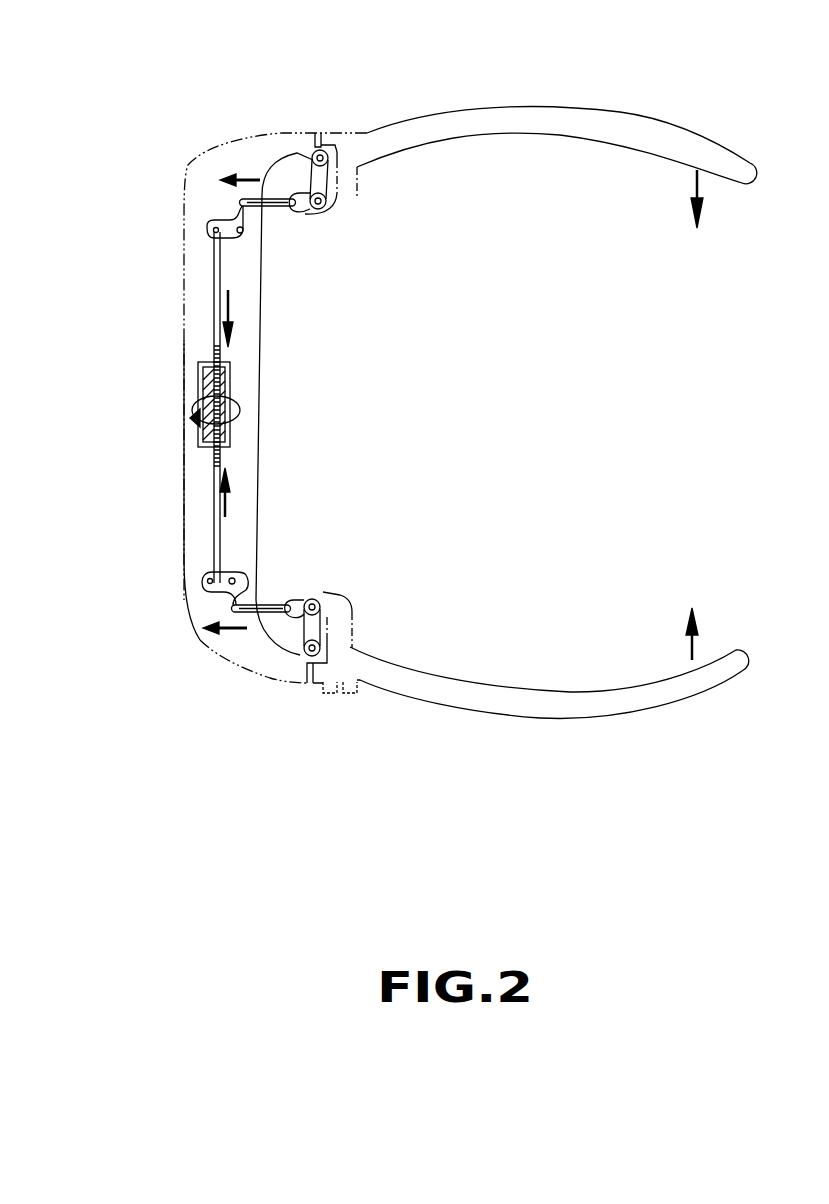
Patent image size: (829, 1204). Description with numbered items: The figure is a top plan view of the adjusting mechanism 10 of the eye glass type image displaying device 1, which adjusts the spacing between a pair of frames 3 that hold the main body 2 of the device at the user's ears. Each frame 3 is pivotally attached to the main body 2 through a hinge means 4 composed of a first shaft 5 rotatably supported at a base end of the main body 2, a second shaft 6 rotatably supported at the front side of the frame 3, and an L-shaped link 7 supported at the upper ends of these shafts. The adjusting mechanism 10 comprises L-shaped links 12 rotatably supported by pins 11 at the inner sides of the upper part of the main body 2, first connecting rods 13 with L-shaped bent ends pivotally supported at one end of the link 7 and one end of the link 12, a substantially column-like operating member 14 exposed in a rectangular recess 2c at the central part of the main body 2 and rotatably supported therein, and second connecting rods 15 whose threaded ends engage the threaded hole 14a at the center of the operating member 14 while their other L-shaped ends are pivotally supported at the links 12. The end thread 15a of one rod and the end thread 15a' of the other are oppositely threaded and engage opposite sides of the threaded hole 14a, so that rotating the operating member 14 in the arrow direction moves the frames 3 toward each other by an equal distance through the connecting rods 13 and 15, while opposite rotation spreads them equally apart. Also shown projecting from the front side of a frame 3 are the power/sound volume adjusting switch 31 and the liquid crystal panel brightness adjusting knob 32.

The eye glass type image displaying device 1 is at (498, 740).
The main body 2 is at (170, 580).
The rectangular recess 2c is at (203, 377).
The frame 3 is at (573, 107).
The hinge means 4 is at (345, 202).
The first shaft 5 is at (321, 150).
The second shaft 6 is at (318, 207).
The L-shaped link 7 is at (302, 210).
The adjusting mechanism 10 is at (279, 459).
The pin 11 is at (243, 236).
The link 12 is at (240, 200).
The first connecting rod 13 is at (277, 207).
The operating member 14 is at (227, 383).
The threaded hole 14a is at (227, 423).
The second connecting rod 15 is at (213, 270).
The end thread 15a is at (138, 358).
The end thread 15a' is at (145, 453).
The power/sound volume adjusting switch 31 is at (325, 692).
The liquid crystal panel brightness adjusting knob 32 is at (353, 692).